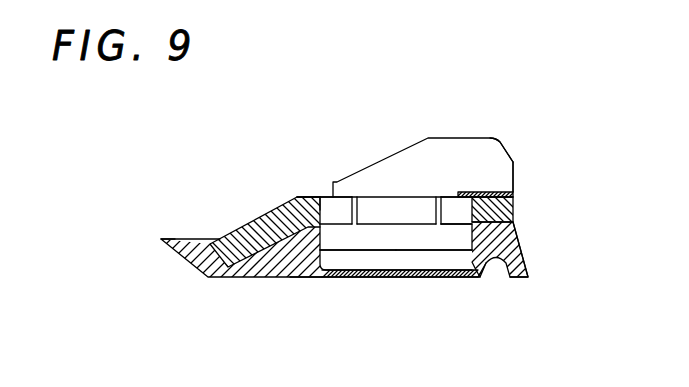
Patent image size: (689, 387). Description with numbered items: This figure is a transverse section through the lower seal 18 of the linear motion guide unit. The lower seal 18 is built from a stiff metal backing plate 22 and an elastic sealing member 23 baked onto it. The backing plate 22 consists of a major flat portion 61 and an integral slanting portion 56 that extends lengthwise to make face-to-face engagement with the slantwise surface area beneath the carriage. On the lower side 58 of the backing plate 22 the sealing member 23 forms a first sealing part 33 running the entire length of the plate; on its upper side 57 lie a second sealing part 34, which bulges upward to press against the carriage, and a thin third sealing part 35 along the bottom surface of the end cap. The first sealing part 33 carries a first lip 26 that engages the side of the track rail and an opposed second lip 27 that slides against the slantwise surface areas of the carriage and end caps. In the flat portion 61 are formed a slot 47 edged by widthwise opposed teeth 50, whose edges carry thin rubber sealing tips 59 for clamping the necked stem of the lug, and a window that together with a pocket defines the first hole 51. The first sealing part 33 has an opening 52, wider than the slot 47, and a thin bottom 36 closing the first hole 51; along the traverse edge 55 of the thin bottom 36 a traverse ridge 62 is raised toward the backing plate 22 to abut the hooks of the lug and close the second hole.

The lower seal 18 is at (524, 153).
The metal backing plate 22 is at (313, 203).
The sealing member 23 is at (283, 268).
The first lip 26 is at (522, 270).
The second lip 27 is at (179, 243).
The first sealing part 33 is at (303, 255).
The second sealing part 34 is at (465, 158).
The third sealing part 35 is at (480, 195).
The thin bottom 36 is at (369, 238).
The slot 47 is at (388, 207).
The teeth 50 is at (338, 210).
The first hole 51 is at (444, 236).
The opening 52 is at (345, 262).
The traverse edge 55 is at (432, 262).
The slanting portion 56 is at (262, 232).
The upper side 57 is at (505, 189).
The lower side 58 is at (497, 247).
The sealing tips 59 is at (359, 207).
The major flat portion 61 is at (475, 203).
The traverse ridge 62 is at (333, 275).